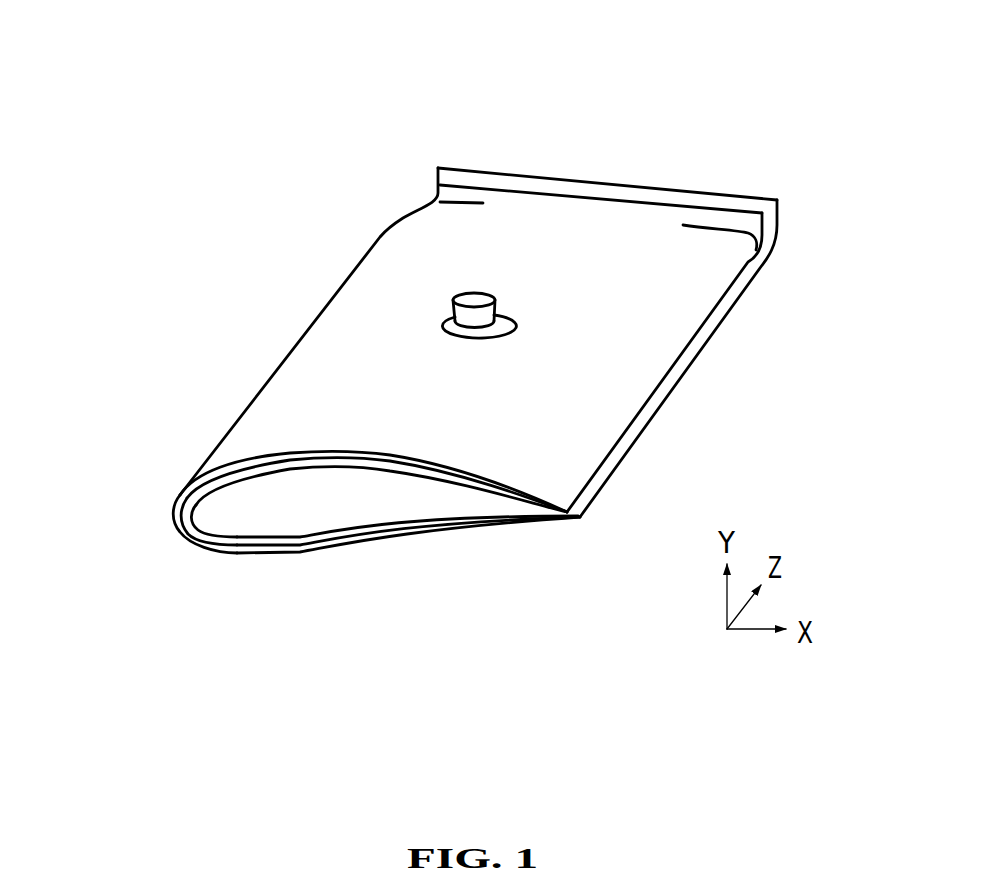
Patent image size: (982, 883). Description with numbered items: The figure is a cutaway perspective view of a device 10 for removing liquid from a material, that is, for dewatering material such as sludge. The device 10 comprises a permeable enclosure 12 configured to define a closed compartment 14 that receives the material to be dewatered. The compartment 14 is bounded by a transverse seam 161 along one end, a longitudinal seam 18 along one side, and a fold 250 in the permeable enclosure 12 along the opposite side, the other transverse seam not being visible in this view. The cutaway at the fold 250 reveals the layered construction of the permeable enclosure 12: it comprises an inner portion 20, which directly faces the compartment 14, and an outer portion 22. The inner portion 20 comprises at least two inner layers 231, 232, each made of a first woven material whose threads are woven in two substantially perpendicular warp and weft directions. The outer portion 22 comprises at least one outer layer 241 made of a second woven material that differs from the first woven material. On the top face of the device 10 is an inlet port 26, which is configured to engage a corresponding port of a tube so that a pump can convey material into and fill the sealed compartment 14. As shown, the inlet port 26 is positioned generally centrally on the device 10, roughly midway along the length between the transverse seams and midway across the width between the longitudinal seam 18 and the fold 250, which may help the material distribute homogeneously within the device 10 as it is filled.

The device 10 is at (279, 79).
The permeable enclosure 12 is at (686, 311).
The compartment 14 is at (238, 503).
The first transverse seam 161 is at (587, 188).
The longitudinal seam 18 is at (655, 400).
The inner portion 20 is at (313, 542).
The outer portion 22 is at (297, 442).
The first inner layer 231 is at (373, 534).
The second inner layer 232 is at (435, 525).
The outer layer 241 is at (246, 559).
The fold 250 is at (177, 553).
The inlet port 26 is at (473, 298).